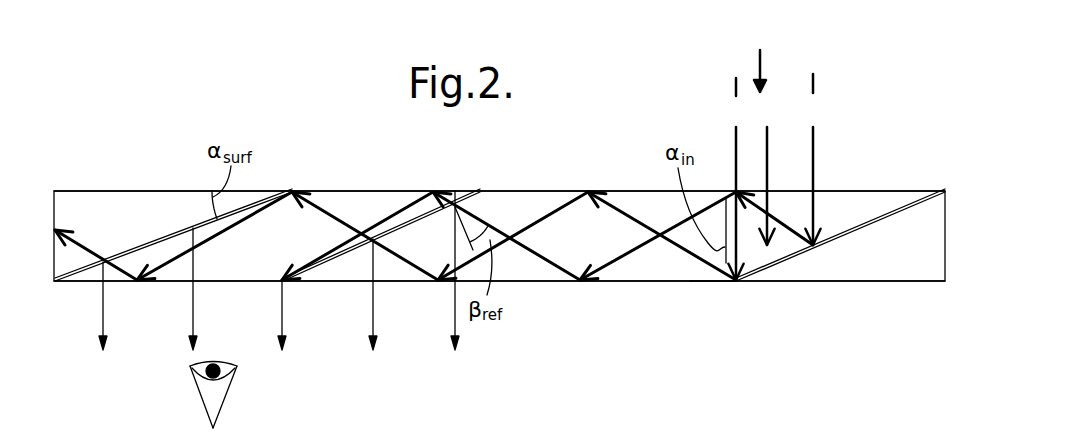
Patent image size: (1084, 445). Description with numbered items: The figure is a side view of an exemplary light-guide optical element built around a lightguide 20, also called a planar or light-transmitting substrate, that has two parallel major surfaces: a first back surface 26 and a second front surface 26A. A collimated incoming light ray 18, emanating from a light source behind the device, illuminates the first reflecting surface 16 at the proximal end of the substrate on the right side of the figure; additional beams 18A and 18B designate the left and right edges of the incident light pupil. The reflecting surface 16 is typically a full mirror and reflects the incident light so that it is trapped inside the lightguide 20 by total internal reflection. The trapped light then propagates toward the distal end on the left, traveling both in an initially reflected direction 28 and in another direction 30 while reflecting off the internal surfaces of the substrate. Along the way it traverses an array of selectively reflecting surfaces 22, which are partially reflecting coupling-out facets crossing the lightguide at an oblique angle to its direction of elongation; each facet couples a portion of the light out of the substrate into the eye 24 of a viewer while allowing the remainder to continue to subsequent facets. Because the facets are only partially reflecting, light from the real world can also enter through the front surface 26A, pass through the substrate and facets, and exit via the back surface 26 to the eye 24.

The first reflecting surface 16 is at (877, 222).
The incoming light ray 18 is at (760, 135).
The incoming light beam 18A is at (725, 179).
The incoming light beam 18B is at (821, 159).
The lightguide 20 is at (837, 213).
The selectively reflecting surfaces 22 is at (137, 240).
The eye 24 is at (230, 393).
The first surface 26 is at (537, 282).
The second surface 26A is at (521, 190).
The initially reflected direction 28 is at (698, 282).
The another direction of propagation 30 is at (573, 192).